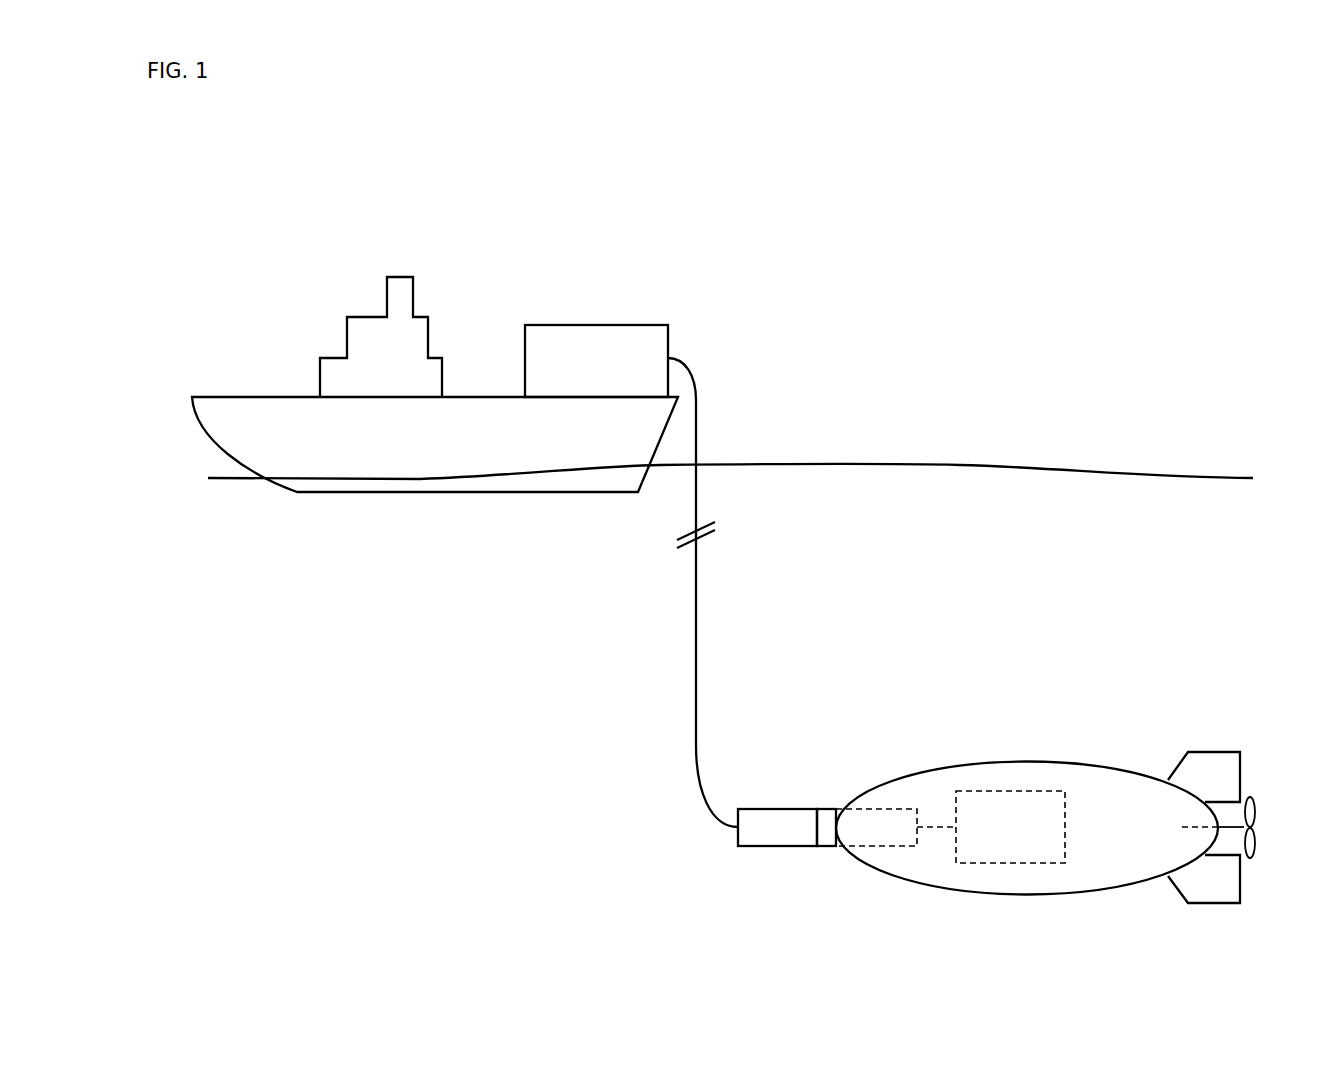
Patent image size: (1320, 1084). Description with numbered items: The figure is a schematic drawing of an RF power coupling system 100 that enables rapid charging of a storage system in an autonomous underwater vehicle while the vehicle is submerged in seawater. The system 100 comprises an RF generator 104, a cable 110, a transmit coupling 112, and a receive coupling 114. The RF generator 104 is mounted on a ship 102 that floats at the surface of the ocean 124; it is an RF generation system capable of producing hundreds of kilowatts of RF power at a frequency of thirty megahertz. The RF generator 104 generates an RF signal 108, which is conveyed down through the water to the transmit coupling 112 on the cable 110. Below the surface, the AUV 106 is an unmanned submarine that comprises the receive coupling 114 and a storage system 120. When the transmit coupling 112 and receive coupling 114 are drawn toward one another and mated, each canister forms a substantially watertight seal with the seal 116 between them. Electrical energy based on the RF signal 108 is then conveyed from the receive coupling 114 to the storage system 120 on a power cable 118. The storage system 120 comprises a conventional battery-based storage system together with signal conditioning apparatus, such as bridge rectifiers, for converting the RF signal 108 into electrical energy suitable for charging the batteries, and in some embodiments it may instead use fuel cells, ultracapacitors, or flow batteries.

The RF power coupling system 100 is at (418, 181).
The ship 102 is at (283, 412).
The RF generator 104 is at (597, 325).
The AUV 106 is at (888, 704).
The RF signal 108 is at (714, 695).
The cable 110 is at (696, 687).
The transmit coupling 112 is at (762, 838).
The receive coupling 114 is at (868, 838).
The seal 116 is at (826, 847).
The power cable 118 is at (937, 828).
The storage system 120 is at (1010, 791).
The ocean 124 is at (252, 583).